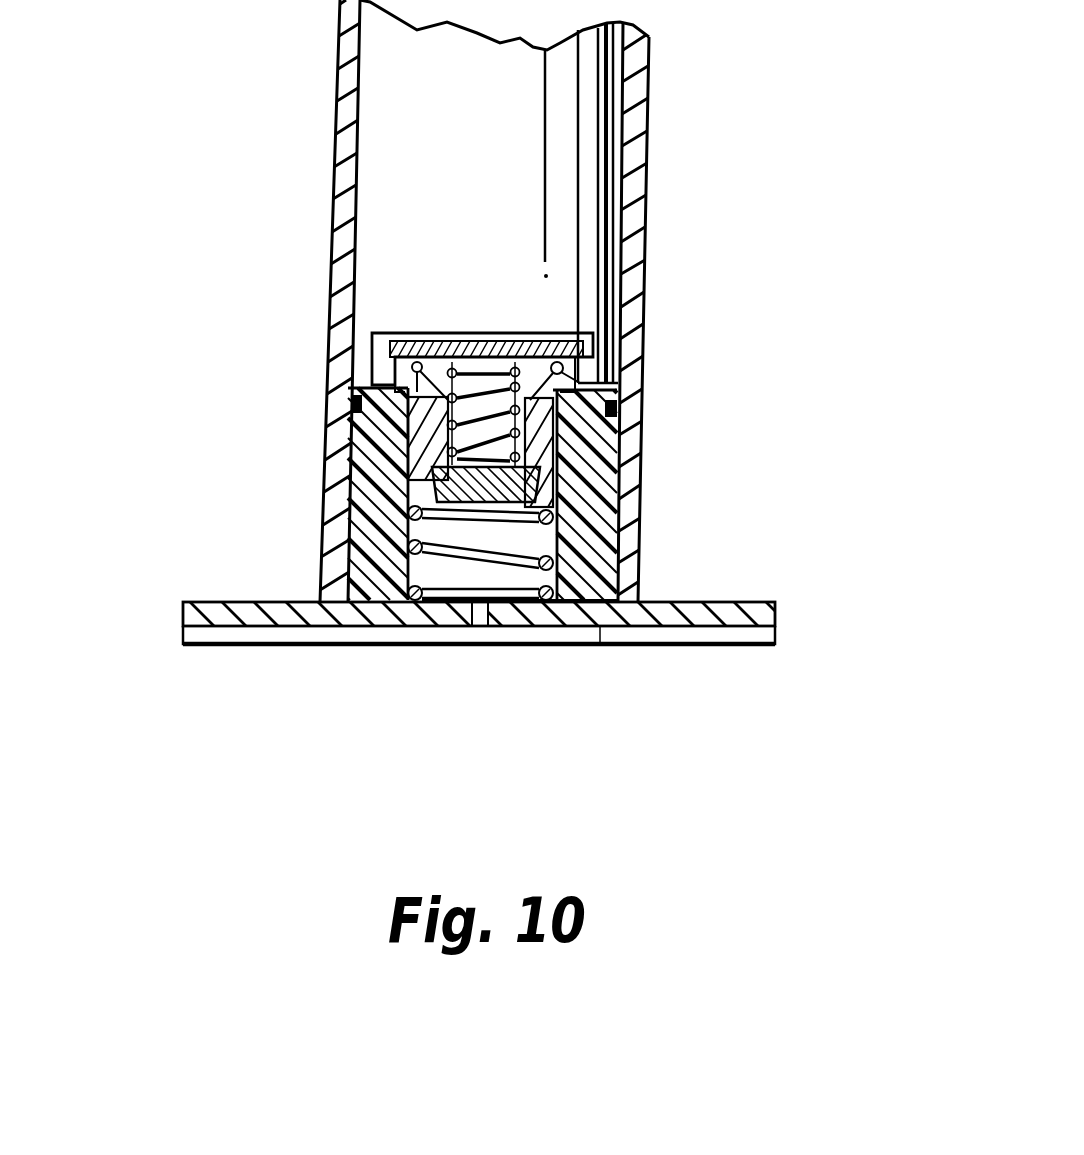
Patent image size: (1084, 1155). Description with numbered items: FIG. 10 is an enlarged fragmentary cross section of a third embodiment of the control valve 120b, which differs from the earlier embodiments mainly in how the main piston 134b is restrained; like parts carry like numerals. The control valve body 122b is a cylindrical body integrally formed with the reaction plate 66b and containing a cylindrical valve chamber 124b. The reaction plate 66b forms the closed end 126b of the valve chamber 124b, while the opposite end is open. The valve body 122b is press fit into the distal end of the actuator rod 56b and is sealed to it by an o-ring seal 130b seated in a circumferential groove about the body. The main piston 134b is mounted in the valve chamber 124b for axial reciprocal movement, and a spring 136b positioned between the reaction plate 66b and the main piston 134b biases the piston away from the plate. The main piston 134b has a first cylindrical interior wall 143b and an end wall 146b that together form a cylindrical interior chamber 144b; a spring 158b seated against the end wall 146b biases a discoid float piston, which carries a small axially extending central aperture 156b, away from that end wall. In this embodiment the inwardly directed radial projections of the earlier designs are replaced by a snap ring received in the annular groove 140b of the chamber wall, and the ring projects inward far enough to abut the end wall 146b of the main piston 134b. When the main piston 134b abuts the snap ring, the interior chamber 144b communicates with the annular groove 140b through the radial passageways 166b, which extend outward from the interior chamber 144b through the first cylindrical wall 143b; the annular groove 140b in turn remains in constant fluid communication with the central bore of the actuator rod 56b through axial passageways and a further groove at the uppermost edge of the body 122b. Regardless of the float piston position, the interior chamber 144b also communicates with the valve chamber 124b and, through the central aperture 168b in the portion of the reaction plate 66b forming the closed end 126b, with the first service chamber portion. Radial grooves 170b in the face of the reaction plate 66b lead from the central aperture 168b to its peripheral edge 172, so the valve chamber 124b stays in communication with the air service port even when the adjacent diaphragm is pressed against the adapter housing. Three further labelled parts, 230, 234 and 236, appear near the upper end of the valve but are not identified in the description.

The control valve 120b is at (436, 165).
The spring 158b is at (472, 341).
The interior chamber 144b is at (435, 341).
The end wall 146b is at (487, 341).
The pivot pin 230 is at (563, 341).
The cap 234 is at (362, 350).
The seal ring 236 is at (352, 397).
The first cylindrical interior wall 143b is at (367, 453).
The central aperture 156b is at (360, 517).
The main piston 134b is at (367, 548).
The annular groove 140b is at (643, 390).
The o-ring seal 130b is at (620, 414).
The radial passageways 166b is at (643, 458).
The actuator rod 56b is at (640, 535).
The control valve body 122b is at (603, 568).
The reaction plate 66b is at (778, 610).
The peripheral edge 172 is at (182, 630).
The valve chamber 124b is at (455, 583).
The central aperture 168b is at (478, 624).
The spring 136b is at (524, 592).
The closed end 126b is at (577, 618).
The radial grooves 170b is at (606, 640).